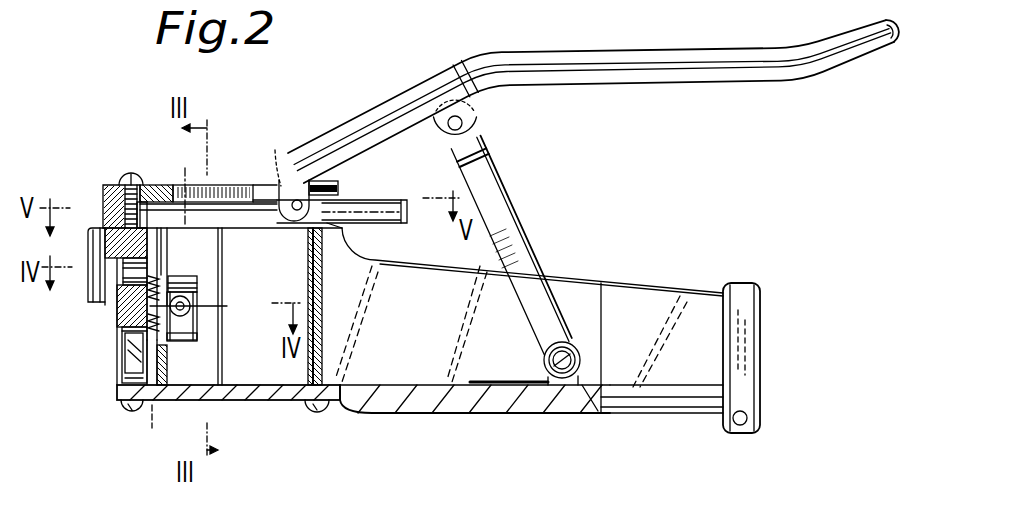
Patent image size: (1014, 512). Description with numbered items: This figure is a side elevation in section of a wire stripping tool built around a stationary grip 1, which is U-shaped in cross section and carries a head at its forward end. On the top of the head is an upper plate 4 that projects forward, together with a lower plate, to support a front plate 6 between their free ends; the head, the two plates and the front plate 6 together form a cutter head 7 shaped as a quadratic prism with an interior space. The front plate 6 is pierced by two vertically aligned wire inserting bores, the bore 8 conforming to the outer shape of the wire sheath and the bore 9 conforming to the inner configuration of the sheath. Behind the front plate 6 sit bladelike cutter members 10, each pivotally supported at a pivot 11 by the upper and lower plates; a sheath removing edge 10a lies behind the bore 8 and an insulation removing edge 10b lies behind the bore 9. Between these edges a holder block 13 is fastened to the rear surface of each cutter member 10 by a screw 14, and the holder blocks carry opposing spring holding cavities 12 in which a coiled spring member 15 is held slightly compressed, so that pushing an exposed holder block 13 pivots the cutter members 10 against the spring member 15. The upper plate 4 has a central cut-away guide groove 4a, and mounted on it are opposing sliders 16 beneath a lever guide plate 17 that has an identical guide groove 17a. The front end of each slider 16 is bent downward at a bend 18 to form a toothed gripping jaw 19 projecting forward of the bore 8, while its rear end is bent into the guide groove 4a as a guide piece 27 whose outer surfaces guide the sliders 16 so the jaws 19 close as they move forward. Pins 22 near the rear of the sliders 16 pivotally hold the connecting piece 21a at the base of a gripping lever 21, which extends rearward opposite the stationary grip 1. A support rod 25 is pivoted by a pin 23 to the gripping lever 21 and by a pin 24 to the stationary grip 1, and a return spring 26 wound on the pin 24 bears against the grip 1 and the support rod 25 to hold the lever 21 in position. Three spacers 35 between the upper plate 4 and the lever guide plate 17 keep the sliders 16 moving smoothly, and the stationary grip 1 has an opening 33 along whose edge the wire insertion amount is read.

The stationary grip 1 is at (463, 400).
The upper plate 4 is at (256, 199).
The guide groove 4a is at (241, 210).
The front plate 6 is at (118, 324).
The cutter head 7 is at (121, 404).
The wire inserting bore 8 is at (116, 293).
The wire inserting bore 9 is at (116, 378).
The cutter member 10 is at (167, 384).
The sheath removing edge 10a is at (167, 262).
The insulation removing edge 10b is at (171, 362).
The pivot 11 is at (173, 294).
The spring holding cavity 12 is at (200, 313).
The holder block 13 is at (198, 338).
The screw 14 is at (127, 348).
The spring member 15 is at (194, 292).
The slider 16 is at (140, 205).
The lever guide plate 17 is at (160, 199).
The guide groove 17a is at (225, 186).
The bent front end 18 is at (108, 205).
The gripping jaw 19 is at (92, 247).
The gripping lever 21 is at (580, 76).
The connecting piece 21a is at (338, 183).
The pin 22 is at (287, 178).
The pin 23 is at (463, 123).
The pin 24 is at (547, 387).
The support rod 25 is at (480, 160).
The return spring 26 is at (596, 392).
The guide piece 27 is at (386, 218).
The opening 33 is at (547, 330).
The spacer 35 is at (118, 203).